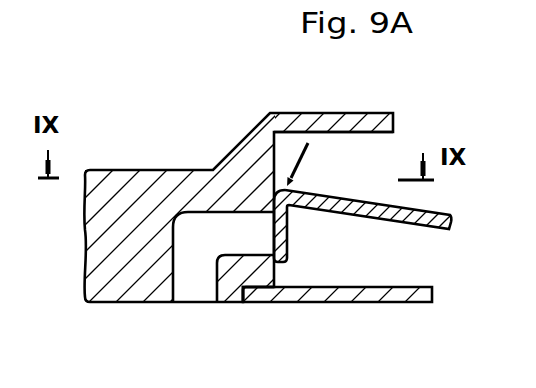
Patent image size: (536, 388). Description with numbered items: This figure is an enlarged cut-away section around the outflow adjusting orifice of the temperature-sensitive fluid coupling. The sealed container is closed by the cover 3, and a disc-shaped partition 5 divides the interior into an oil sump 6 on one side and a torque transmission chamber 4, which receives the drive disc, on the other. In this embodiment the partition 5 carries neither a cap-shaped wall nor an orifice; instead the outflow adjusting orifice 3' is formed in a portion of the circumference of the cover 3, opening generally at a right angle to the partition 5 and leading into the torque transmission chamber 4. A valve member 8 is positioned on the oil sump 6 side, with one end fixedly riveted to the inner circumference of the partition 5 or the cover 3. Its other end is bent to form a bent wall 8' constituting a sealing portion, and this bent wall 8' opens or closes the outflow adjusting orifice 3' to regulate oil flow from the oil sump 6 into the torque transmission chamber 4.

The cover 3 is at (226, 195).
The outflow adjusting orifice 3' is at (223, 205).
The torque transmission chamber 4 is at (245, 306).
The partition 5 is at (371, 295).
The oil sump 6 is at (367, 148).
The valve member 8 is at (343, 229).
The bent wall 8' is at (303, 226).